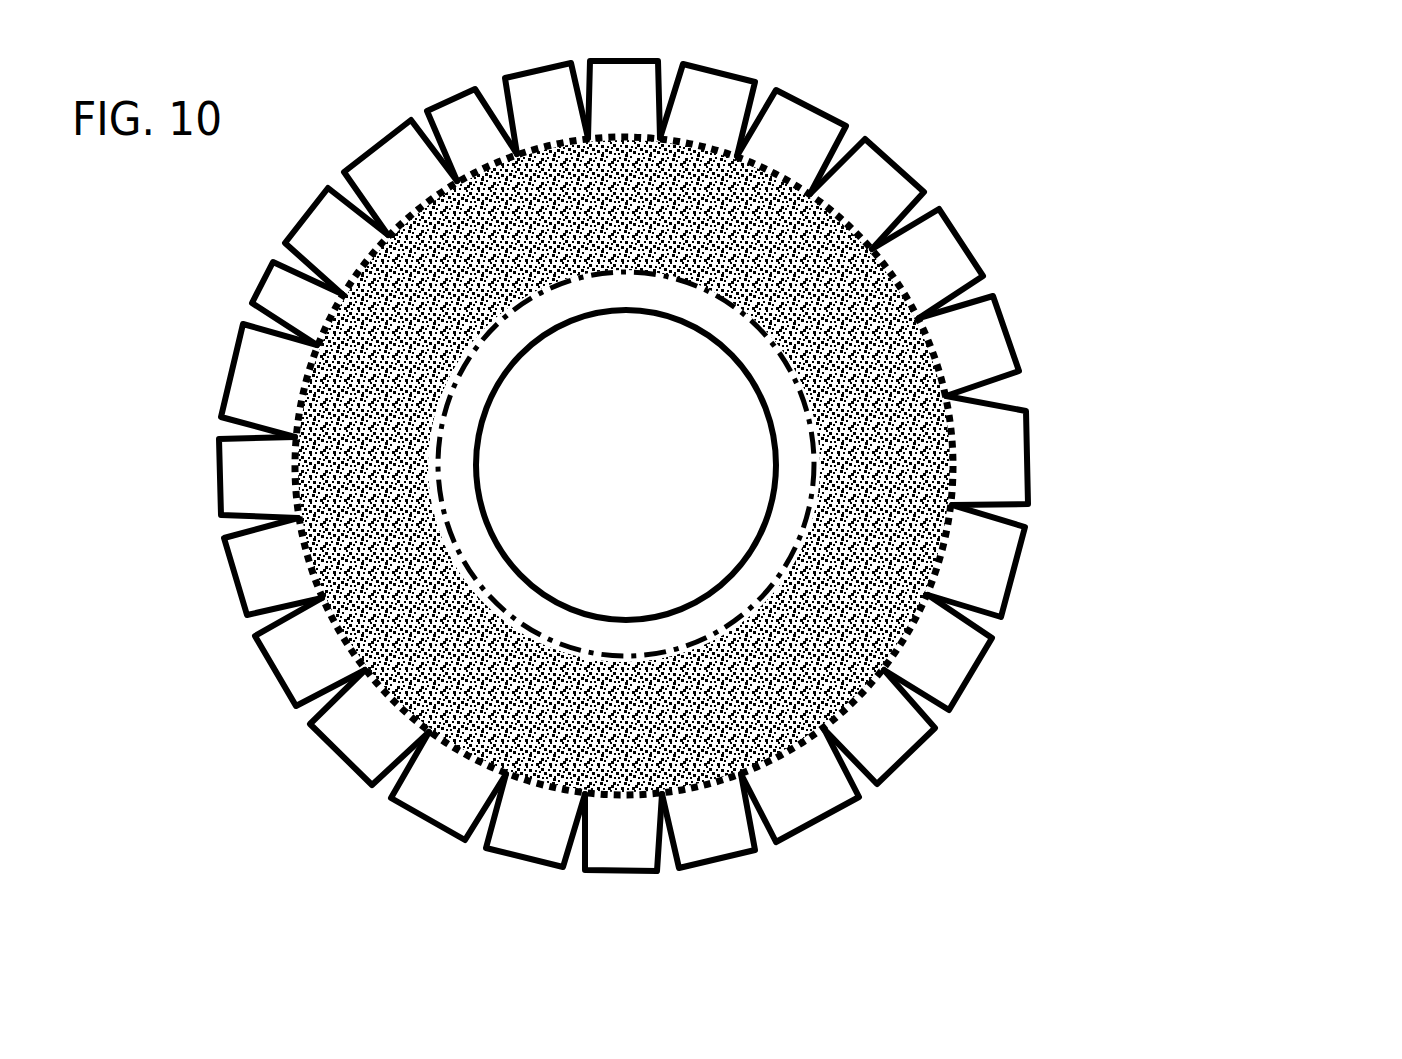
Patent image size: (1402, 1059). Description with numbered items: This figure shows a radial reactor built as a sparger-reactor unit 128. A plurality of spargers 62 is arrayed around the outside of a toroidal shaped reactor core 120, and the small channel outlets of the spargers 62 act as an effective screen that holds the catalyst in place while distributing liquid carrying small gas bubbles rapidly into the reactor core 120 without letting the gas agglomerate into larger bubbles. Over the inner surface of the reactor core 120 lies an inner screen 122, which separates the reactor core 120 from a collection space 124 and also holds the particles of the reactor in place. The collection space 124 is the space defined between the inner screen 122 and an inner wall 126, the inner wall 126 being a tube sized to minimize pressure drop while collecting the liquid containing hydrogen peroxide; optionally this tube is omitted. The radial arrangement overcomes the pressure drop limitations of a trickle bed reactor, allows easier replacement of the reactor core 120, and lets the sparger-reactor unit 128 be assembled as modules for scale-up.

The sparger 62 is at (894, 176).
The reactor core 120 is at (881, 330).
The inner screen 122 is at (852, 460).
The collection space 124 is at (819, 517).
The inner wall 126 is at (775, 557).
The sparger-reactor unit 128 is at (799, 466).